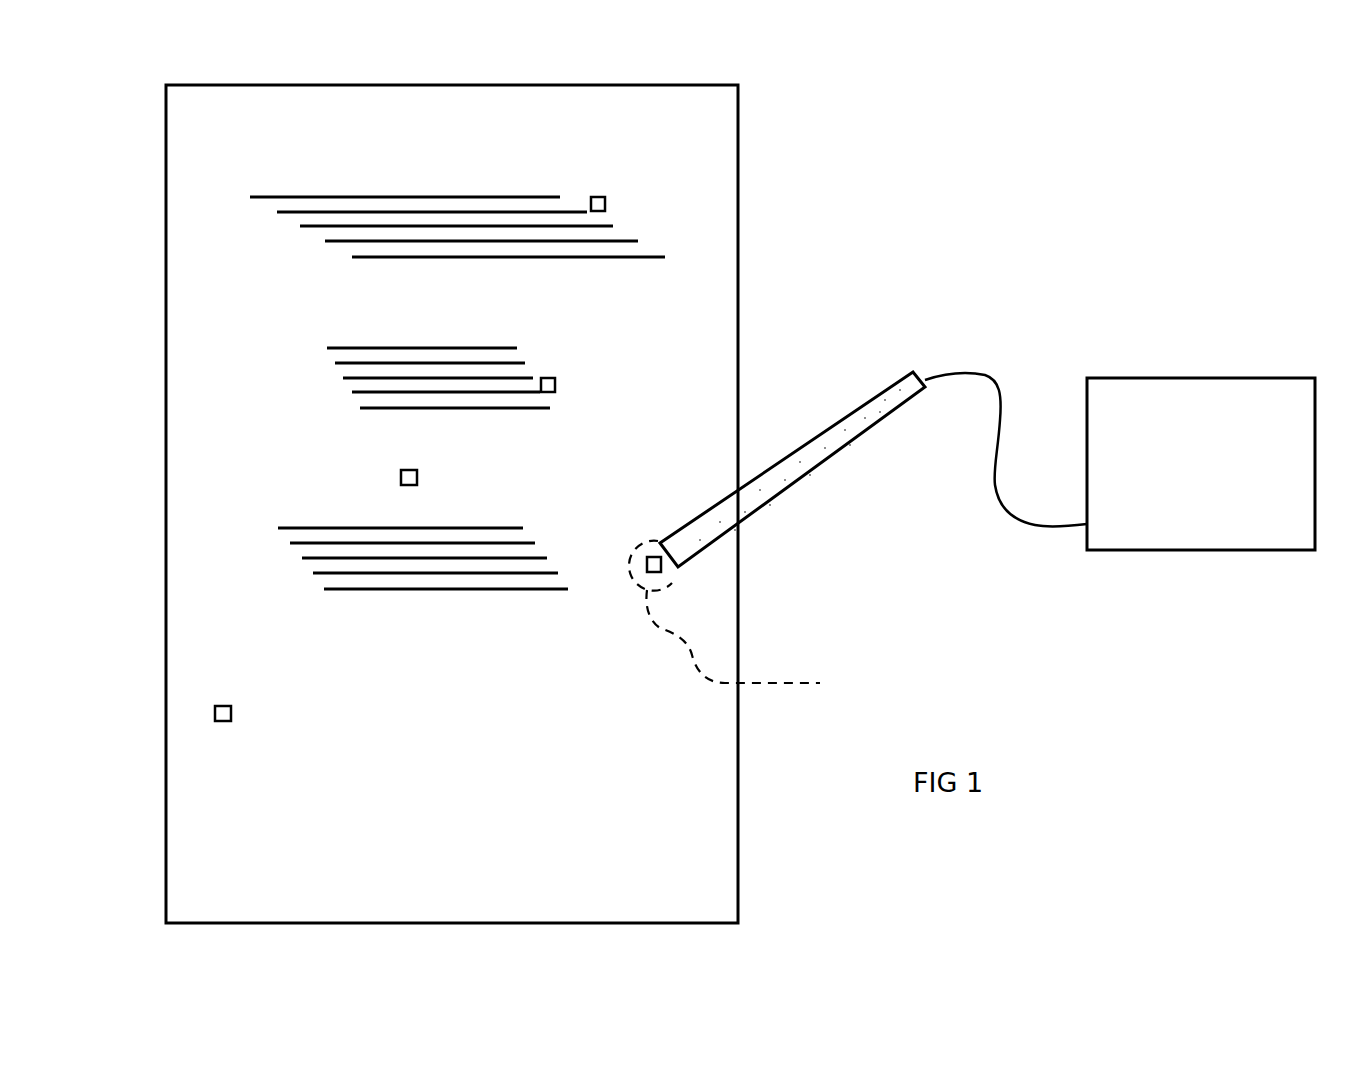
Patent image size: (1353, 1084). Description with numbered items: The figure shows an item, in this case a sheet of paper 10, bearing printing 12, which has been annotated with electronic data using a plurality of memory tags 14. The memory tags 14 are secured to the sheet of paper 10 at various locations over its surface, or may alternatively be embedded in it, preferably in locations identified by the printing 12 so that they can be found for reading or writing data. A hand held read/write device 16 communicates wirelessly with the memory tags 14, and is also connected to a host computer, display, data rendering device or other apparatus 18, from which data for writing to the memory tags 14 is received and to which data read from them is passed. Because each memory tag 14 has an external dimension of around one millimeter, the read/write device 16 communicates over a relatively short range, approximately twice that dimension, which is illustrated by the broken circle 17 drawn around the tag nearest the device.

The sheet of paper 10 is at (186, 372).
The printing 12 is at (321, 224).
The memory tag 14 is at (605, 204).
The hand held read/write device 16 is at (823, 462).
The broken circle 17 is at (741, 616).
The host computer 18 is at (1188, 550).